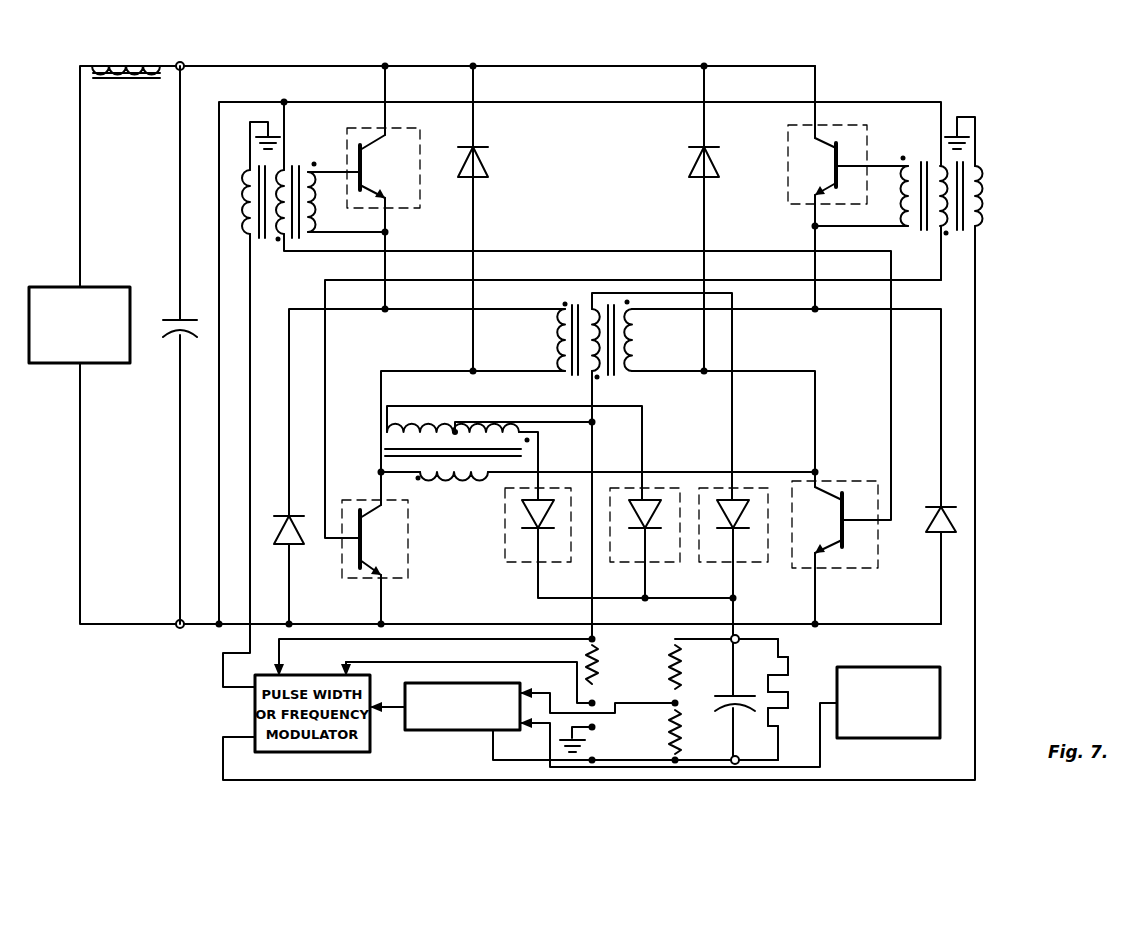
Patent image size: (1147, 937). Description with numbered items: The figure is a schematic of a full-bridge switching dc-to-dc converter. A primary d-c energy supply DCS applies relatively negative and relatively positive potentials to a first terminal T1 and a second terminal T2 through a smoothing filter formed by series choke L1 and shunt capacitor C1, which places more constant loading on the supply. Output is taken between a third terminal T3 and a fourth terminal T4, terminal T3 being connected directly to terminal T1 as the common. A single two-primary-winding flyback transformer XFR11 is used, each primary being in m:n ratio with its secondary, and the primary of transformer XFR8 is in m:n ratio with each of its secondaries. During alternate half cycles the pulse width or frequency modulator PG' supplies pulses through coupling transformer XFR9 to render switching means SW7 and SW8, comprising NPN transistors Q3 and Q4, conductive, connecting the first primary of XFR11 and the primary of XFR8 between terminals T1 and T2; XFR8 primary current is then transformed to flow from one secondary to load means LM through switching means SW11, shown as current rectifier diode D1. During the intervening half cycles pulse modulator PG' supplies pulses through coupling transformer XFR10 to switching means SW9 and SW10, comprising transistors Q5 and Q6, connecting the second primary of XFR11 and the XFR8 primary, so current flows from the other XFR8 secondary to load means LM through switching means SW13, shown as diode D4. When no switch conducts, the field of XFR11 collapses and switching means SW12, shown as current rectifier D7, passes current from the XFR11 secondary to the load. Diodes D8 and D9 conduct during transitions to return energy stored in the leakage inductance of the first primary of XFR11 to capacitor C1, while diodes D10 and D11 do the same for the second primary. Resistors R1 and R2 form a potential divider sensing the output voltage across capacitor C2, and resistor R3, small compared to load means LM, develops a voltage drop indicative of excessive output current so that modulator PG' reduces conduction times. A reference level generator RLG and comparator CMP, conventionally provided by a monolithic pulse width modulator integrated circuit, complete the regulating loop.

The series choke L1 is at (137, 62).
The second terminal T2 is at (182, 47).
The first terminal T1 is at (182, 634).
The primary d-c energy supply DCS is at (106, 287).
The shunt capacitor C1 is at (168, 334).
The coupling transformer XFR9 is at (289, 188).
The switching means SW7 is at (347, 130).
The NPN bipolar transistor Q3 is at (381, 166).
The diode D8 is at (488, 175).
The diode D10 is at (688, 174).
The switching means SW9 is at (867, 125).
The NPN bipolar transistor Q5 is at (816, 166).
The coupling transformer XFR10 is at (933, 181).
The two-primary-winding flyback transformer XFR11 is at (565, 330).
The diode D9 is at (293, 546).
The NPN bipolar transistor Q6 is at (376, 540).
The switching means SW10 is at (402, 578).
The transformer XFR8 is at (453, 479).
The current rectifier diode D1 is at (527, 521).
The switching means SW11 is at (525, 566).
The current rectifier diode D4 is at (634, 521).
The switching means SW13 is at (650, 562).
The current rectifier D7 is at (722, 521).
The switching means SW12 is at (748, 562).
The NPN bipolar transistor Q4 is at (824, 520).
The switching means SW8 is at (829, 481).
The diode D11 is at (935, 535).
The pulse width or frequency modulator PG' is at (312, 656).
The resistor R3 is at (598, 680).
The resistor R1 is at (681, 676).
The resistor R2 is at (681, 715).
The fourth terminal T4 is at (738, 646).
The third terminal T3 is at (732, 758).
The capacitor C2 is at (760, 682).
The load means LM is at (792, 652).
The reference level generator RLG is at (899, 667).
The comparator CMP is at (455, 737).